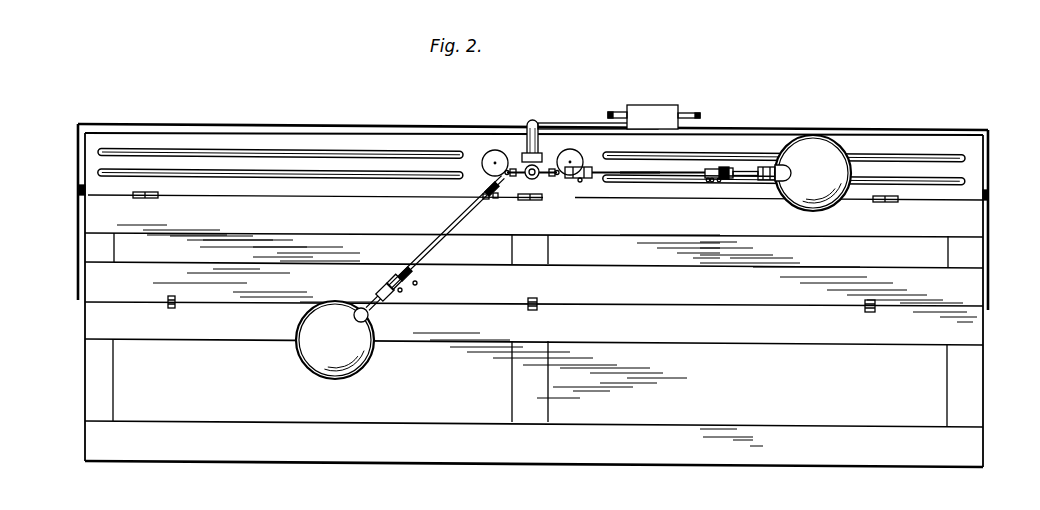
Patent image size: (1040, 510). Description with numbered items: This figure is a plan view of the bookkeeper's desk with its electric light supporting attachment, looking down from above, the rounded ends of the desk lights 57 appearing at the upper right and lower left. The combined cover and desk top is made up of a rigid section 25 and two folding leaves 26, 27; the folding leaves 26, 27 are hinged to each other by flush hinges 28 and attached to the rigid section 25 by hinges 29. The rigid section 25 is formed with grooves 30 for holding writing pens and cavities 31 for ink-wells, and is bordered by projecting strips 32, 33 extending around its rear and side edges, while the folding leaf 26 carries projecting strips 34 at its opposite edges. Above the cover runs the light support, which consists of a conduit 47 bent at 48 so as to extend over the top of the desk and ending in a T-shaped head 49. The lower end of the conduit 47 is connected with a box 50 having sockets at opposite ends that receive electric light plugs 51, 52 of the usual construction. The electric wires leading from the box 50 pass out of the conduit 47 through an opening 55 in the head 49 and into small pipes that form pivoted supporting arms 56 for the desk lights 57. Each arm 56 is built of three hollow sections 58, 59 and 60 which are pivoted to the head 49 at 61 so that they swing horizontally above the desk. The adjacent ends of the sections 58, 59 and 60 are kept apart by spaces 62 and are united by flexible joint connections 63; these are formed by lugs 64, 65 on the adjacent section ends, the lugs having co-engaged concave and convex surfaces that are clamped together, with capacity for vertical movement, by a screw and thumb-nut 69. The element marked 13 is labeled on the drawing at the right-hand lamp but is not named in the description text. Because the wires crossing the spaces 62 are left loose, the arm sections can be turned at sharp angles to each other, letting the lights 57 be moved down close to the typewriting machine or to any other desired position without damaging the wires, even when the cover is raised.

The float ball 13 is at (790, 133).
The rigid section 25 is at (913, 142).
The folding leaf 26 is at (950, 229).
The folding leaf 27 is at (950, 399).
The flush hinges 28 is at (177, 300).
The hinges 29 is at (150, 199).
The grooves 30 is at (337, 173).
The cavities 31 is at (488, 156).
The projecting strip 32 is at (218, 130).
The projecting strip 33 is at (78, 166).
The projecting strips 34 is at (78, 240).
The conduit 47 is at (558, 126).
The bend 48 is at (530, 122).
The T-shaped head 49 is at (523, 181).
The box 50 is at (648, 108).
The electric light plug 51 is at (690, 113).
The electric light plug 52 is at (620, 113).
The opening 55 is at (530, 183).
The pivoted supporting arm 56 is at (648, 162).
The desk light 57 is at (642, 176).
The hollow section 58 is at (482, 170).
The hollow section 59 is at (470, 207).
The hollow section 60 is at (750, 180).
The pivot 61 is at (508, 157).
The space 62 is at (722, 167).
The flexible joint connection 63 is at (388, 303).
The lug 64 is at (728, 180).
The lug 65 is at (706, 181).
The thumb-nut 69 is at (718, 181).